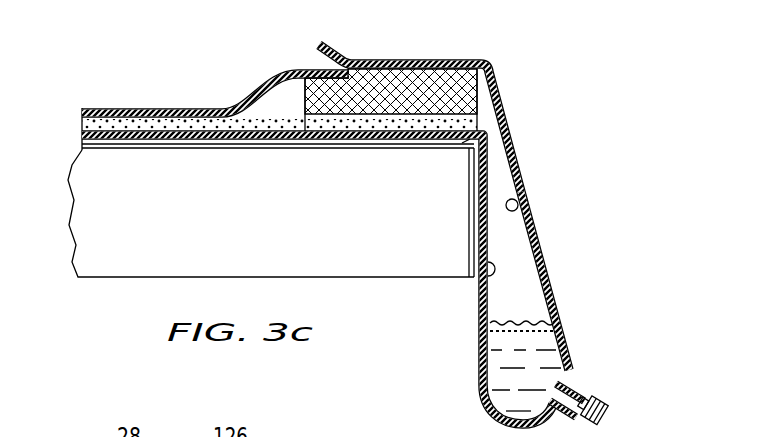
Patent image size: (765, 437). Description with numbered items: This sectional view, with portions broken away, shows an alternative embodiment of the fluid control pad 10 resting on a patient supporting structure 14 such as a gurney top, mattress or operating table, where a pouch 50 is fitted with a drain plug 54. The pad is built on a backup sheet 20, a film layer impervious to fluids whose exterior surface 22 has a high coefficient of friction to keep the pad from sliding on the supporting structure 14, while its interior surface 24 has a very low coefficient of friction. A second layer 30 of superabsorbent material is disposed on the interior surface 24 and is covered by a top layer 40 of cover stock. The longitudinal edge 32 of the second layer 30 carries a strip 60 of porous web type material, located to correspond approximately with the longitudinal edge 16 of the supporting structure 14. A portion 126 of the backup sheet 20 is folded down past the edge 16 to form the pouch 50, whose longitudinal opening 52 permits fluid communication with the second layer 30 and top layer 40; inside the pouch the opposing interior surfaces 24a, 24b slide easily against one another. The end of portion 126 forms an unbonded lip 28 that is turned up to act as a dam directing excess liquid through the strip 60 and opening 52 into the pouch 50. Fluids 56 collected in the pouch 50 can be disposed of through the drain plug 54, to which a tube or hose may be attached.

The fluid control pad 10 is at (123, 63).
The supporting structure 14 is at (253, 224).
The longitudinal edge 16 is at (462, 143).
The backup sheet 20 is at (560, 284).
The exterior surface 22 is at (350, 141).
The interior surface 24 is at (140, 128).
The interior surface 24a is at (532, 210).
The interior surface 24b is at (478, 250).
The lip 28 is at (340, 57).
The second layer 30 is at (80, 120).
The longitudinal edge 32 is at (305, 140).
The top layer 40 is at (228, 106).
The pouch 50 is at (560, 305).
The longitudinal opening 52 is at (502, 119).
The drain plug 54 is at (592, 400).
The fluids 56 is at (497, 385).
The strip 60 is at (425, 78).
The portion 126 is at (445, 62).